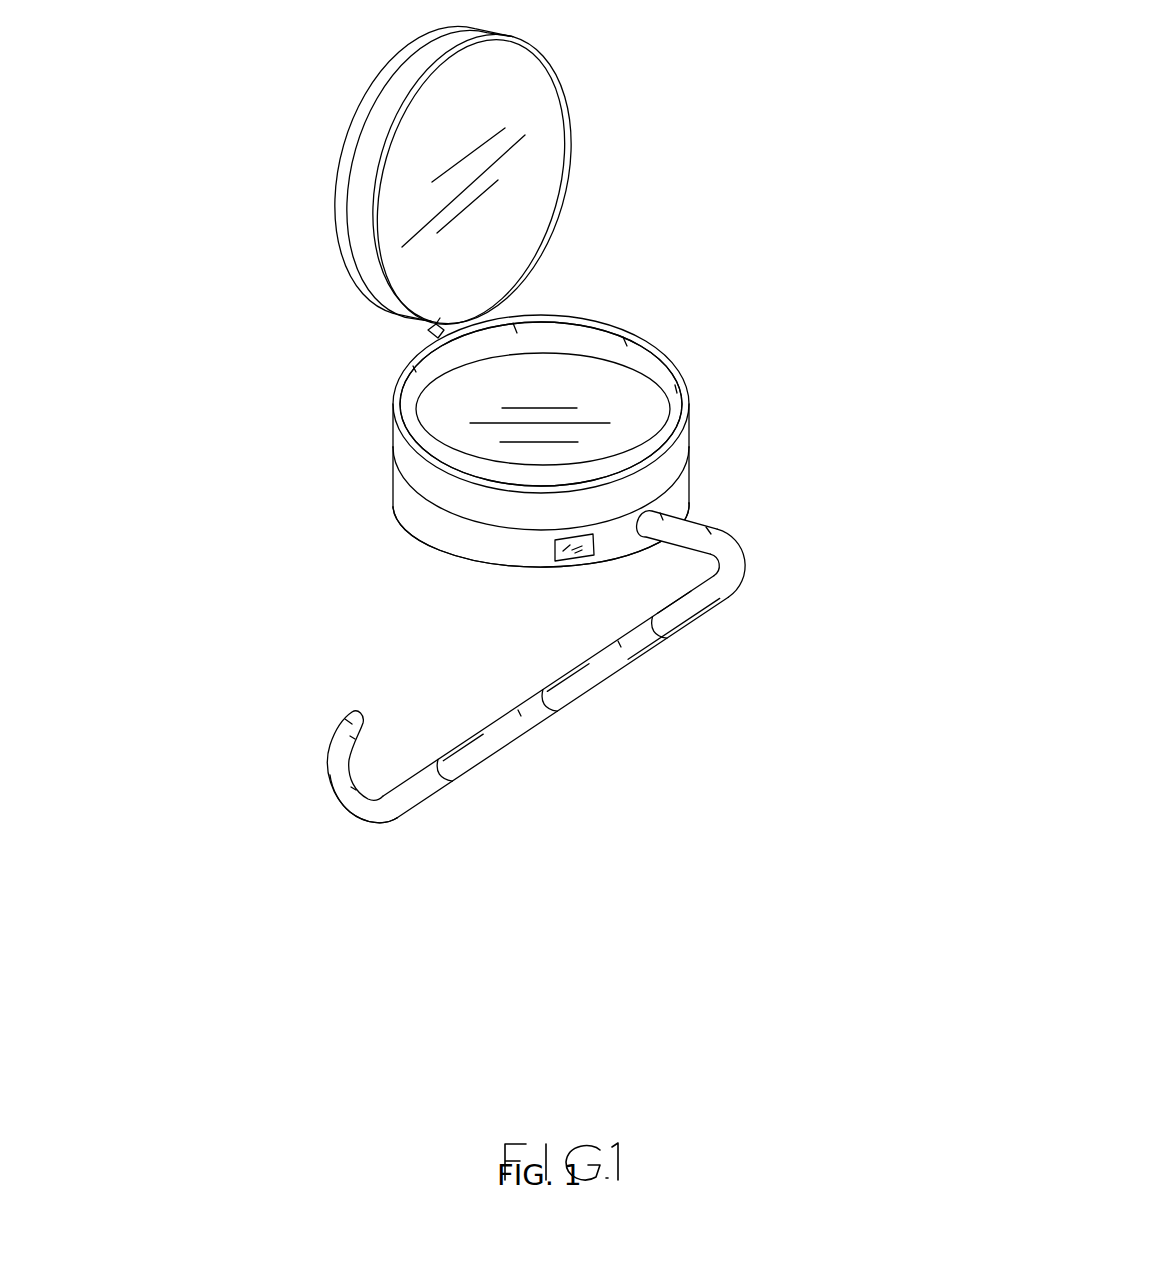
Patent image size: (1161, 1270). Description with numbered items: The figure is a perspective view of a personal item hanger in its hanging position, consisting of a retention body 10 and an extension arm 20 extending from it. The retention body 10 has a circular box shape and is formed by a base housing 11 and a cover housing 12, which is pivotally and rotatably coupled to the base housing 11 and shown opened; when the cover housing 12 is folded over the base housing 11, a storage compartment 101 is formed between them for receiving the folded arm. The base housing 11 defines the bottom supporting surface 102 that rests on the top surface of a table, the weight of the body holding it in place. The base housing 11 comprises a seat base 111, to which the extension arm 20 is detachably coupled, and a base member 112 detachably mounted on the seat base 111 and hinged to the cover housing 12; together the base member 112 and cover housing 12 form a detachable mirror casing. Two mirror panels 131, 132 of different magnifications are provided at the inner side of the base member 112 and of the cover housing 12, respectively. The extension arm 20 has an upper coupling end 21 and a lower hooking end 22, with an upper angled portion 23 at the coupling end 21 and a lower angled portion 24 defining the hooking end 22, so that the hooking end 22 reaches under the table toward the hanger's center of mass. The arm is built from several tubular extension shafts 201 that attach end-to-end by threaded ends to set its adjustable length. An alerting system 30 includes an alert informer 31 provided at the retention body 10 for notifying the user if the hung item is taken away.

The retention body 10 is at (559, 474).
The base housing 11 is at (500, 415).
The cover housing 12 is at (460, 179).
The storage compartment 101 is at (578, 380).
The bottom supporting surface 102 is at (392, 507).
The seat base 111 is at (395, 487).
The base member 112 is at (397, 415).
The mirror panel 131 is at (535, 148).
The mirror panel 132 is at (637, 407).
The extension arm 20 is at (559, 656).
The coupling end 21 is at (710, 513).
The hooking end 22 is at (317, 783).
The upper angled portion 23 is at (748, 548).
The lower angled portion 24 is at (348, 825).
The extension shaft 201 is at (690, 607).
The alerting system 30 is at (406, 588).
The alert informer 31 is at (553, 566).